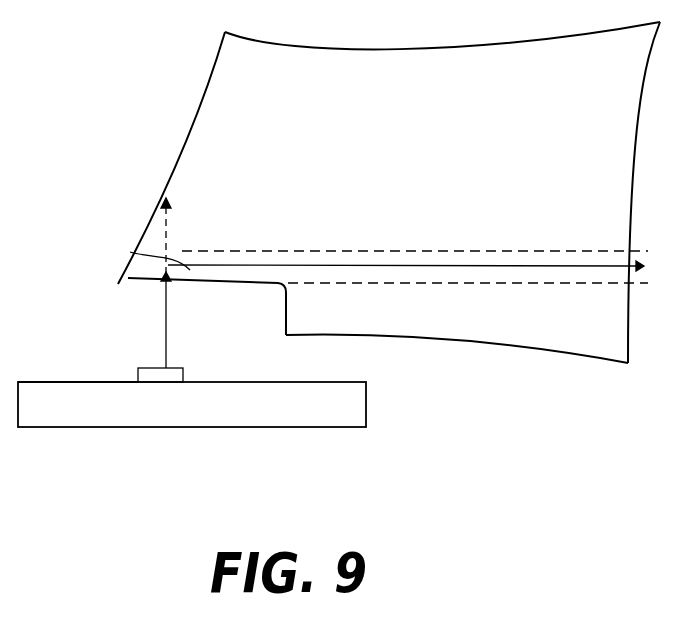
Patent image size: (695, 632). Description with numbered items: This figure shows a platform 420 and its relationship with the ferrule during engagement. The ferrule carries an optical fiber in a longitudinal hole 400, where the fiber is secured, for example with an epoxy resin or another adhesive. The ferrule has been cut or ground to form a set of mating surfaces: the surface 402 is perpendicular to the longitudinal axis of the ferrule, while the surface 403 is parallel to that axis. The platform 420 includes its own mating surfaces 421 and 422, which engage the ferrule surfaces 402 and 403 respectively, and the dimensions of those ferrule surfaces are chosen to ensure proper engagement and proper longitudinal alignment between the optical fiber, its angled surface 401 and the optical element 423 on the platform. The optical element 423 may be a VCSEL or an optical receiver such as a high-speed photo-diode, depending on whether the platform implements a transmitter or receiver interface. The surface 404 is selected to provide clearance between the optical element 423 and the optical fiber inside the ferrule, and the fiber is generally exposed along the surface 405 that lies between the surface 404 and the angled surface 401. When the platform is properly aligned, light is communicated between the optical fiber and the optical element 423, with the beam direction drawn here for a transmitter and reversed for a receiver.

The longitudinal hole 400 is at (587, 258).
The angled surface 401 is at (224, 208).
The mating surface 402 is at (368, 326).
The mating surface 403 is at (272, 308).
The surface 404 is at (230, 297).
The surface 405 is at (136, 254).
The platform 420 is at (28, 382).
The mating surface 421 is at (368, 402).
The mating surface 422 is at (272, 382).
The optical element 423 is at (168, 332).